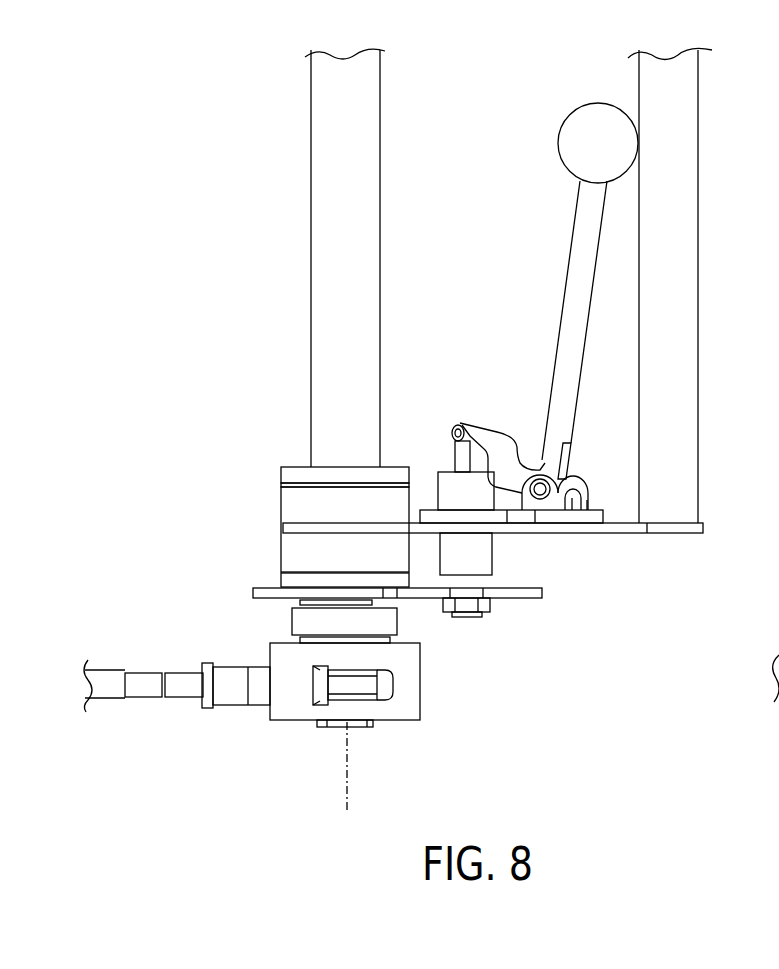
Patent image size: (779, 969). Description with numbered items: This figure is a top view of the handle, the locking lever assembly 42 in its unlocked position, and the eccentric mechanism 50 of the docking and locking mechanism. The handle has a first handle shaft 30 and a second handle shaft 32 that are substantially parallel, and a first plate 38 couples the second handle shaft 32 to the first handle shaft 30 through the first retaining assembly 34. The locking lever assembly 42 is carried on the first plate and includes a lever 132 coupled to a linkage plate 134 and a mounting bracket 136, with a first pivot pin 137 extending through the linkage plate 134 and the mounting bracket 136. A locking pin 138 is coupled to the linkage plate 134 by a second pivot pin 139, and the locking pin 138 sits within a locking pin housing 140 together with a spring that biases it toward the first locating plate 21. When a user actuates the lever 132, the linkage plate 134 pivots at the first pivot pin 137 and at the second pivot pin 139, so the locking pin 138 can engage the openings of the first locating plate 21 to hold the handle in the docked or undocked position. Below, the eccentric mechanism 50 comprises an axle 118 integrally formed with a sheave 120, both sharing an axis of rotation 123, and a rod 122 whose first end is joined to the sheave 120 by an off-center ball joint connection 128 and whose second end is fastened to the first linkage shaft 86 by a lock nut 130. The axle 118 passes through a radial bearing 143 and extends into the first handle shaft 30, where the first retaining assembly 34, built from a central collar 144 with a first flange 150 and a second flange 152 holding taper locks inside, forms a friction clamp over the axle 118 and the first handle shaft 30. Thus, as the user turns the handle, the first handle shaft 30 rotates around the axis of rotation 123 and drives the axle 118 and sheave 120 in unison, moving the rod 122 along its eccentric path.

The first locating plate 21 is at (522, 598).
The first handle shaft 30 is at (342, 237).
The second handle shaft 32 is at (680, 195).
The first retaining assembly 34 is at (268, 530).
The first plate 38 is at (675, 538).
The locking lever assembly 42 is at (488, 318).
The eccentric mechanism 50 is at (432, 715).
The first linkage shaft 86 is at (103, 690).
The axle 118 is at (318, 600).
The sheave 120 is at (410, 672).
The rod 122 is at (235, 707).
The axis of rotation 123 is at (343, 800).
The ball joint connection 128 is at (355, 712).
The lock nut 130 is at (207, 668).
The lever 132 is at (583, 257).
The linkage plate 134 is at (490, 440).
The mounting bracket 136 is at (572, 518).
The first pivot pin 137 is at (550, 490).
The locking pin 138 is at (465, 462).
The second pivot pin 139 is at (458, 425).
The locking pin housing 140 is at (465, 558).
The radial bearing 143 is at (372, 620).
The central collar 144 is at (292, 503).
The first flange 150 is at (290, 577).
The second flange 152 is at (297, 470).